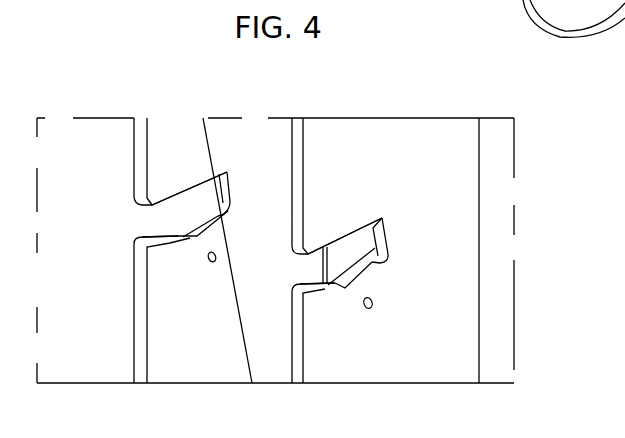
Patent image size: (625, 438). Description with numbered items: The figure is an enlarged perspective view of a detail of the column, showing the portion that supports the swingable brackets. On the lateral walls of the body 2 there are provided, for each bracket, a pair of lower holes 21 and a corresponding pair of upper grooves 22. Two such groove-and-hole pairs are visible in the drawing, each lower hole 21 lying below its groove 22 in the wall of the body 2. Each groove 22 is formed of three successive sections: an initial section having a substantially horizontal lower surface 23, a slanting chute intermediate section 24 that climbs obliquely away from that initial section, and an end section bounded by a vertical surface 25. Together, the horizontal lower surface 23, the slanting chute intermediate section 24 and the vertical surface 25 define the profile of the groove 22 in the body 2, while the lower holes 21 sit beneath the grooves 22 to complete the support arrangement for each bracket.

The body 2 is at (466, 154).
The lower holes 21 is at (212, 265).
The upper grooves 22 is at (160, 216).
The substantially horizontal lower surface 23 is at (147, 236).
The slanting chute intermediate section 24 is at (213, 218).
The vertical surface 25 is at (227, 200).